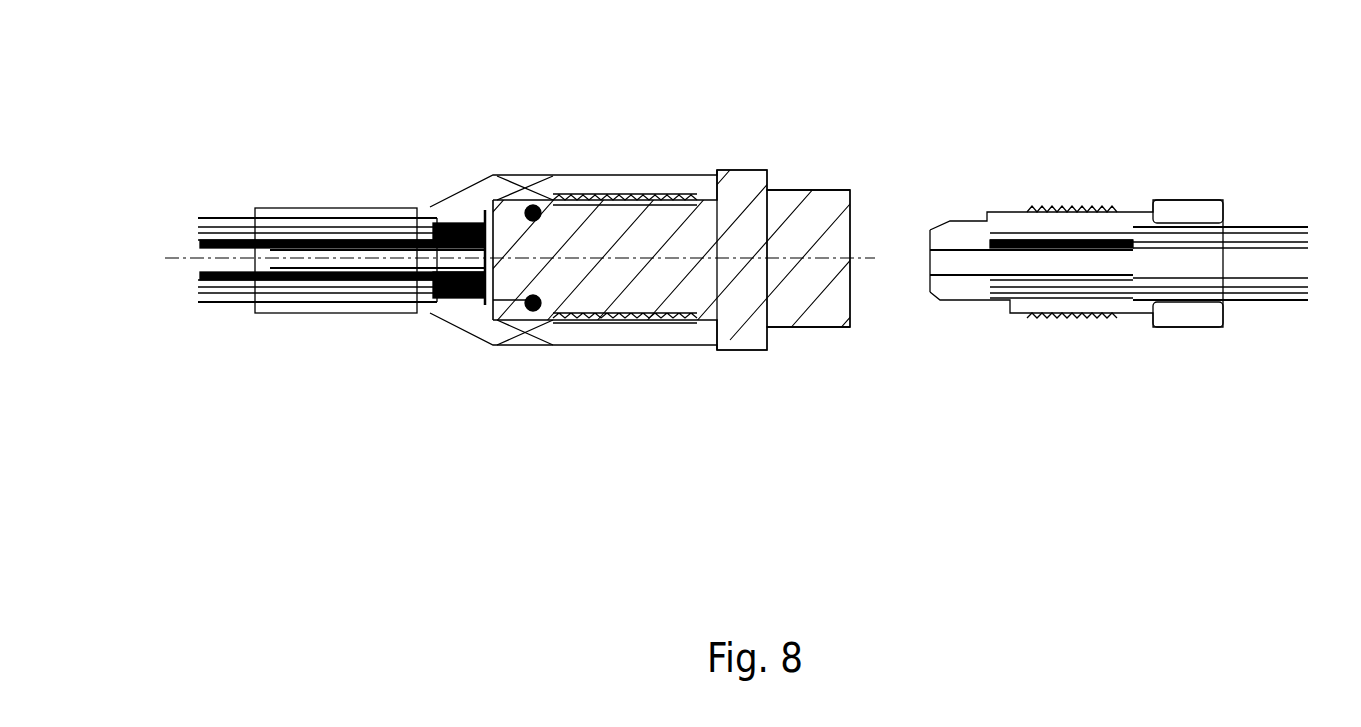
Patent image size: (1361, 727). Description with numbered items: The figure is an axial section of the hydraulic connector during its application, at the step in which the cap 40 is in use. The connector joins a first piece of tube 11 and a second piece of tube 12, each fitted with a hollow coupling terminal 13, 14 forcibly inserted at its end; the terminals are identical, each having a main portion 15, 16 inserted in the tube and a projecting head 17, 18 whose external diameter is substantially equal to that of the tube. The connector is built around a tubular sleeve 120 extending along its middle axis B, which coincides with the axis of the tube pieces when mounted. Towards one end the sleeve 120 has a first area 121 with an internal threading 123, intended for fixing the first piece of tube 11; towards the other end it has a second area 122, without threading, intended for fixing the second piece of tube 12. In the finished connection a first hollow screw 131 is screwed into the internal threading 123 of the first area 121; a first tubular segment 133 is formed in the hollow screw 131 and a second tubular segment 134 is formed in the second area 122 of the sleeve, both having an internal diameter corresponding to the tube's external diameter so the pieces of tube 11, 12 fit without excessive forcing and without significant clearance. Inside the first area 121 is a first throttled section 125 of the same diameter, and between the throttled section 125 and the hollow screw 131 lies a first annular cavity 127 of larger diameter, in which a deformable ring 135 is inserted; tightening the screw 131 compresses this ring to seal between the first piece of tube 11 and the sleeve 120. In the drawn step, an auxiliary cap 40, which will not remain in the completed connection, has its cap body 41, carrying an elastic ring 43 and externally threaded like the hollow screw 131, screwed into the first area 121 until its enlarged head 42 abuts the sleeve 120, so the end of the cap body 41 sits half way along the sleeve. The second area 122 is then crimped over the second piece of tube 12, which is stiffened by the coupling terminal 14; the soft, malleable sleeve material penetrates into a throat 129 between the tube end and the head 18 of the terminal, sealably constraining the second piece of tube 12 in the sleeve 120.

The first piece of tube 11 is at (1255, 240).
The second piece of tube 12 is at (245, 293).
The coupling terminal 13 is at (1145, 270).
The coupling terminal 14 is at (252, 262).
The main portion 15 is at (1053, 277).
The main portion 16 is at (365, 285).
The projecting head 17 is at (980, 283).
The projecting head 18 is at (454, 290).
The cap 40 is at (797, 185).
The cap body 41 is at (615, 290).
The enlarged head 42 is at (757, 200).
The elastic ring 43 is at (530, 315).
The tubular sleeve 120 is at (497, 185).
The first area 121 is at (608, 165).
The second area 122 is at (373, 170).
The internal threading 123 is at (658, 200).
The first throttled section 125 is at (497, 307).
The first annular cavity 127 is at (550, 196).
The throat 129 is at (453, 220).
The first hollow screw 131 is at (1165, 215).
The first tubular segment 133 is at (1210, 220).
The second tubular segment 134 is at (295, 303).
The deformable ring 135 is at (1000, 215).
The middle axis B is at (178, 257).